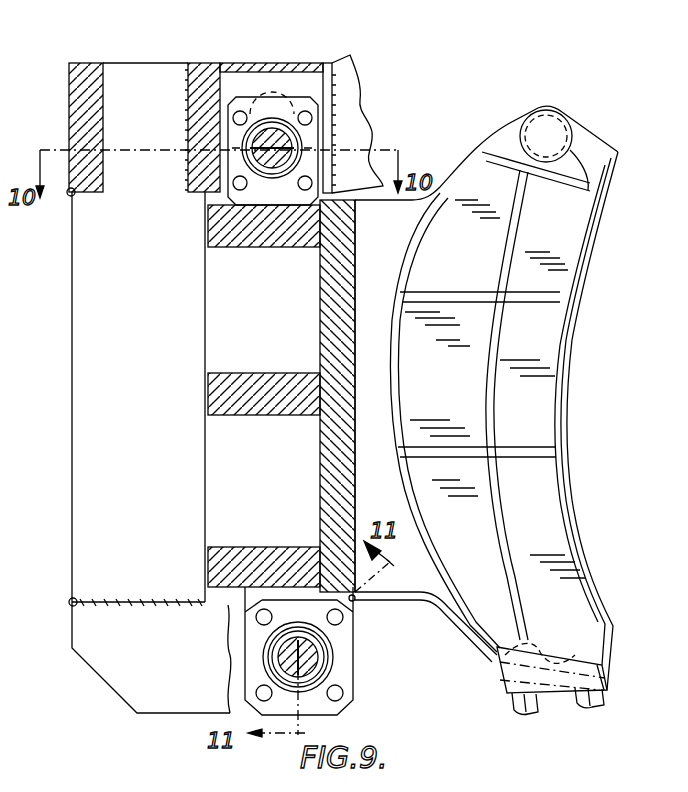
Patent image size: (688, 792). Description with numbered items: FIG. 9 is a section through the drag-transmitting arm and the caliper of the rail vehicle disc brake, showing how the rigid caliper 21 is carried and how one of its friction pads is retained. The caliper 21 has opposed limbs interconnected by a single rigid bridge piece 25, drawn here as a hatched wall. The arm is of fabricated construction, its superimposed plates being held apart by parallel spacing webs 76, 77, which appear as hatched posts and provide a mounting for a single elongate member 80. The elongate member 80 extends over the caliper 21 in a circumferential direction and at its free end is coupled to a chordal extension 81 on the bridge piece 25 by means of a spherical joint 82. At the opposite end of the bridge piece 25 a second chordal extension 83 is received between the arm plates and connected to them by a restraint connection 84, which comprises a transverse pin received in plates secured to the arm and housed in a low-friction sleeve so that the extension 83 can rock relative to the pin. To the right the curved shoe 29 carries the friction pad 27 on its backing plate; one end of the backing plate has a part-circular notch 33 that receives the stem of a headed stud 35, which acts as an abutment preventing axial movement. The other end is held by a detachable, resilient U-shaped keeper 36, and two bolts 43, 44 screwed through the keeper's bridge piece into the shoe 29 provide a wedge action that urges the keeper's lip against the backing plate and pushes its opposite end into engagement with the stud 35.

The rigid caliper 21 is at (337, 445).
The bridge piece 25 is at (345, 290).
The friction pad 27 is at (574, 178).
The shoe 29 is at (515, 132).
The part-circular notch 33 is at (530, 650).
The headed stud 35 is at (540, 123).
The keeper 36 is at (600, 690).
The bolt 43 is at (527, 712).
The bolt 44 is at (590, 706).
The spacing web 76 is at (205, 95).
The spacing web 77 is at (84, 91).
The elongate member 80 is at (100, 414).
The chordal extension 81 is at (355, 600).
The spherical joint 82 is at (315, 658).
The chordal extension 83 is at (250, 108).
The restraint connection 84 is at (285, 148).